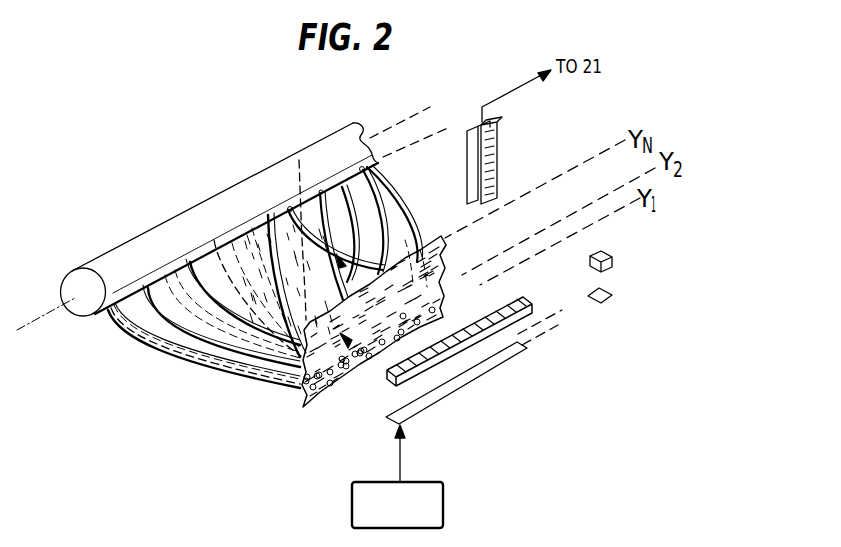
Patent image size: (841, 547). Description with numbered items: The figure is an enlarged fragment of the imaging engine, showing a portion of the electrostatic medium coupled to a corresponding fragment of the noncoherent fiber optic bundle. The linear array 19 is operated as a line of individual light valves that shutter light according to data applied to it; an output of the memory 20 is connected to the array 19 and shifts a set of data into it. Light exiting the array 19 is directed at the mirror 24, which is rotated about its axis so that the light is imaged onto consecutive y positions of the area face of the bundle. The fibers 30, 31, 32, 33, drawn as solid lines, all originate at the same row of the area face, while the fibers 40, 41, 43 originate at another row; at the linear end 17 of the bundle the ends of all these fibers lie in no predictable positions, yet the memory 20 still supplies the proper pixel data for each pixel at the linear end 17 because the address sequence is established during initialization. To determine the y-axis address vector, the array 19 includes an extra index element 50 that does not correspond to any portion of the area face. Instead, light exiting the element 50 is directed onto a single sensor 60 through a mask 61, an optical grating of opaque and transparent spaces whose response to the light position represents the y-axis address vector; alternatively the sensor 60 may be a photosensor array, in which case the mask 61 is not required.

The linear end 17 is at (100, 317).
The linear array 19 is at (387, 382).
The memory 20 is at (443, 505).
The mirror 24 is at (477, 373).
The fiber 30 is at (163, 355).
The fiber 31 is at (157, 282).
The fiber 32 is at (196, 257).
The fiber 33 is at (268, 213).
The fiber 40 is at (227, 355).
The fiber 41 is at (214, 240).
The fiber 43 is at (299, 160).
The extra index element 50 is at (611, 255).
The sensor 60 is at (473, 163).
The mask 61 is at (498, 163).